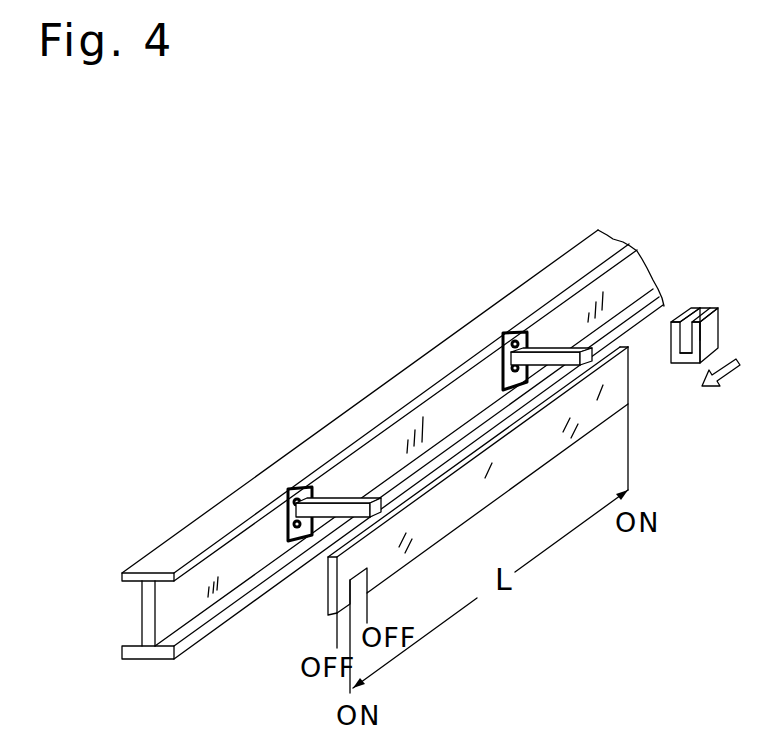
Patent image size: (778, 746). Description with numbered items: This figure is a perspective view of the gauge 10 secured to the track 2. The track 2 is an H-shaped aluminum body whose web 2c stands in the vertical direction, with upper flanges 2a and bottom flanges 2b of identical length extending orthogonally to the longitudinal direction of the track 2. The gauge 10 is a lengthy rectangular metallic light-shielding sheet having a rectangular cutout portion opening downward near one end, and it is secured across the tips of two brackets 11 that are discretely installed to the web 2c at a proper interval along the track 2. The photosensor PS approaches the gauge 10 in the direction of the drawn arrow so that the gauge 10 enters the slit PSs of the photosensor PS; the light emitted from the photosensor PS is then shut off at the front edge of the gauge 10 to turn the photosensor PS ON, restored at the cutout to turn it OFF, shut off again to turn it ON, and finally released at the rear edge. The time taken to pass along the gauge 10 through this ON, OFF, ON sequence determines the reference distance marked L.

The track 2 is at (343, 488).
The upper flange 2a is at (200, 552).
The bottom flange 2b is at (130, 661).
The web 2c is at (195, 605).
The gauge 10 is at (606, 401).
The bracket 11 is at (344, 494).
The photosensor PS is at (710, 353).
The slit PSs is at (684, 355).